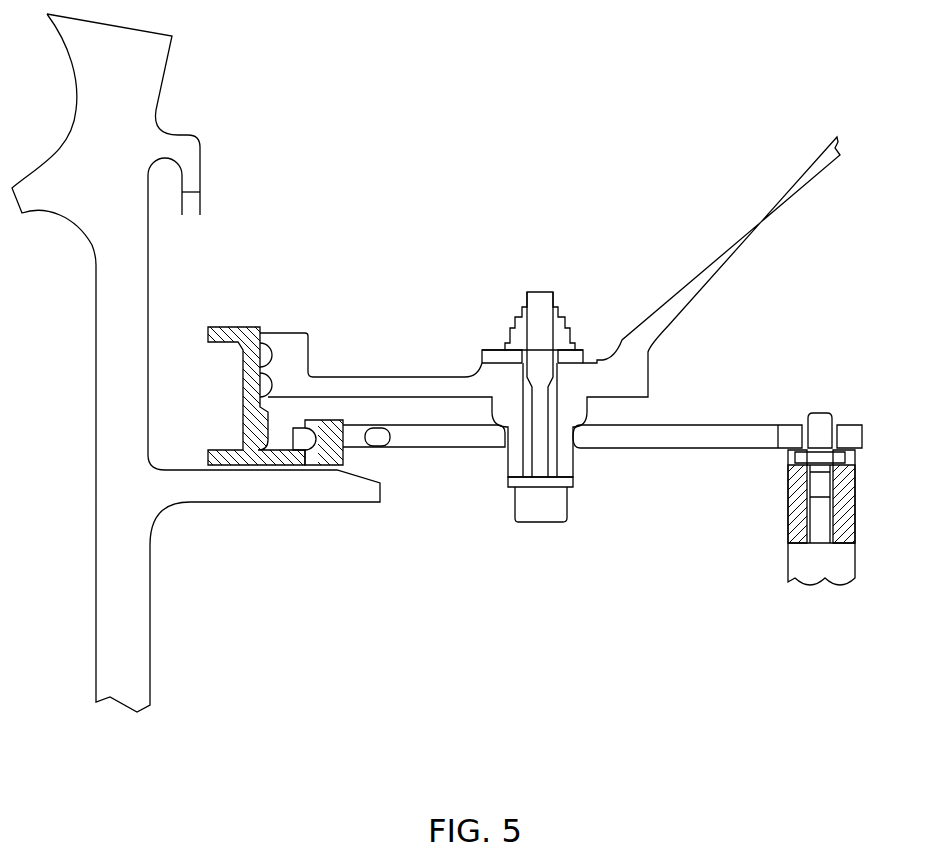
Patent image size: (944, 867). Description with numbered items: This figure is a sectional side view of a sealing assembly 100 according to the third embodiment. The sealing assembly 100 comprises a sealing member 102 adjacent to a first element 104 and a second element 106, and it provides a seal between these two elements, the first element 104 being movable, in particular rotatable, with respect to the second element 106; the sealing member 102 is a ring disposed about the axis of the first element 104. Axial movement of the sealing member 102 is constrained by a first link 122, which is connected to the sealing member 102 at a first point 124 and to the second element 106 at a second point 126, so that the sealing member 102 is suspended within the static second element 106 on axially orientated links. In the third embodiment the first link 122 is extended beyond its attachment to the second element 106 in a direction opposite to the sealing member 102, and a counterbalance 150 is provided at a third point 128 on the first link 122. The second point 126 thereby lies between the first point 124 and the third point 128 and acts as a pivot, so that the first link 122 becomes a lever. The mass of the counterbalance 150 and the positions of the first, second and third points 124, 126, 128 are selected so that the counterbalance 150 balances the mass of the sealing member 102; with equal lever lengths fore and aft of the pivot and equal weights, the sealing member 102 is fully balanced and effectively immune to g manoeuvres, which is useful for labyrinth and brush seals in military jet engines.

The sealing assembly 100 is at (457, 663).
The sealing member 102 is at (250, 328).
The first element 104 is at (134, 275).
The second element 106 is at (373, 382).
The first link 122 is at (425, 442).
The first point 124 is at (313, 440).
The second point 126 is at (580, 437).
The third point 128 is at (843, 427).
The counterbalance 150 is at (797, 502).